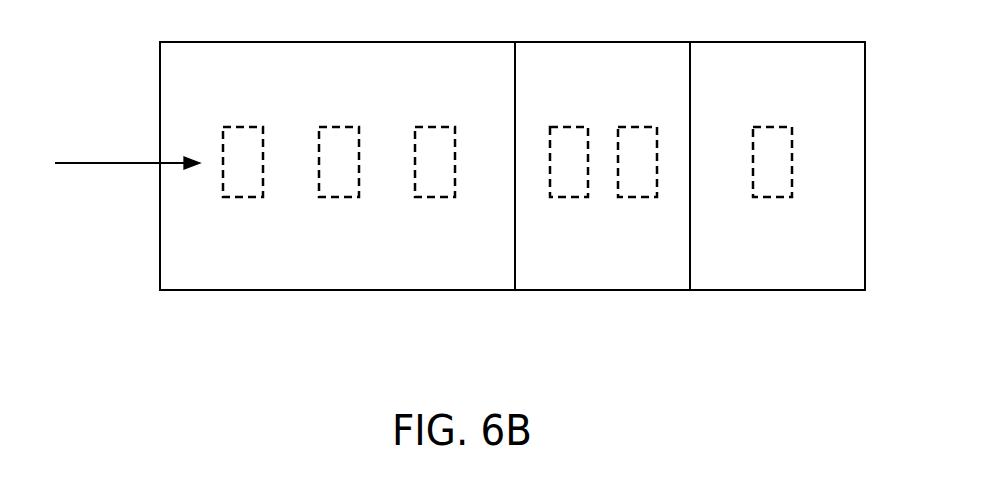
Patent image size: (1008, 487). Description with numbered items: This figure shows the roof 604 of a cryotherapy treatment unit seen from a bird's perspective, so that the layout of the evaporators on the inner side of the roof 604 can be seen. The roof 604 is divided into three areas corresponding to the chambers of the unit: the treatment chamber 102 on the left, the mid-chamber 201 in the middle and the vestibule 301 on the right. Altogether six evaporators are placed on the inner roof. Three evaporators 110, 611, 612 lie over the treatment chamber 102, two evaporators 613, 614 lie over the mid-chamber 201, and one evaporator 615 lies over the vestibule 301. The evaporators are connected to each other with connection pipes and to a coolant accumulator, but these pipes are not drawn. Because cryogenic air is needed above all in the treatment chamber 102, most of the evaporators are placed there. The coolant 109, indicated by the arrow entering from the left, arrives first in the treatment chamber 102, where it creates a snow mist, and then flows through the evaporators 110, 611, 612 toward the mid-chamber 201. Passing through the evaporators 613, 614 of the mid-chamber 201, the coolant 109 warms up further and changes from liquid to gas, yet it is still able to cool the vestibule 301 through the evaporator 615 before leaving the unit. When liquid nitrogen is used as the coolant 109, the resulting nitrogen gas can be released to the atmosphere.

The coolant 109 is at (72, 160).
The treatment chamber 102 is at (288, 120).
The mid-chamber 201 is at (591, 120).
The vestibule 301 is at (816, 123).
The roof 604 is at (610, 291).
The evaporator 110 is at (243, 175).
The evaporator 611 is at (339, 175).
The evaporator 612 is at (435, 175).
The evaporator 613 is at (569, 175).
The evaporator 614 is at (638, 175).
The evaporator 615 is at (773, 175).